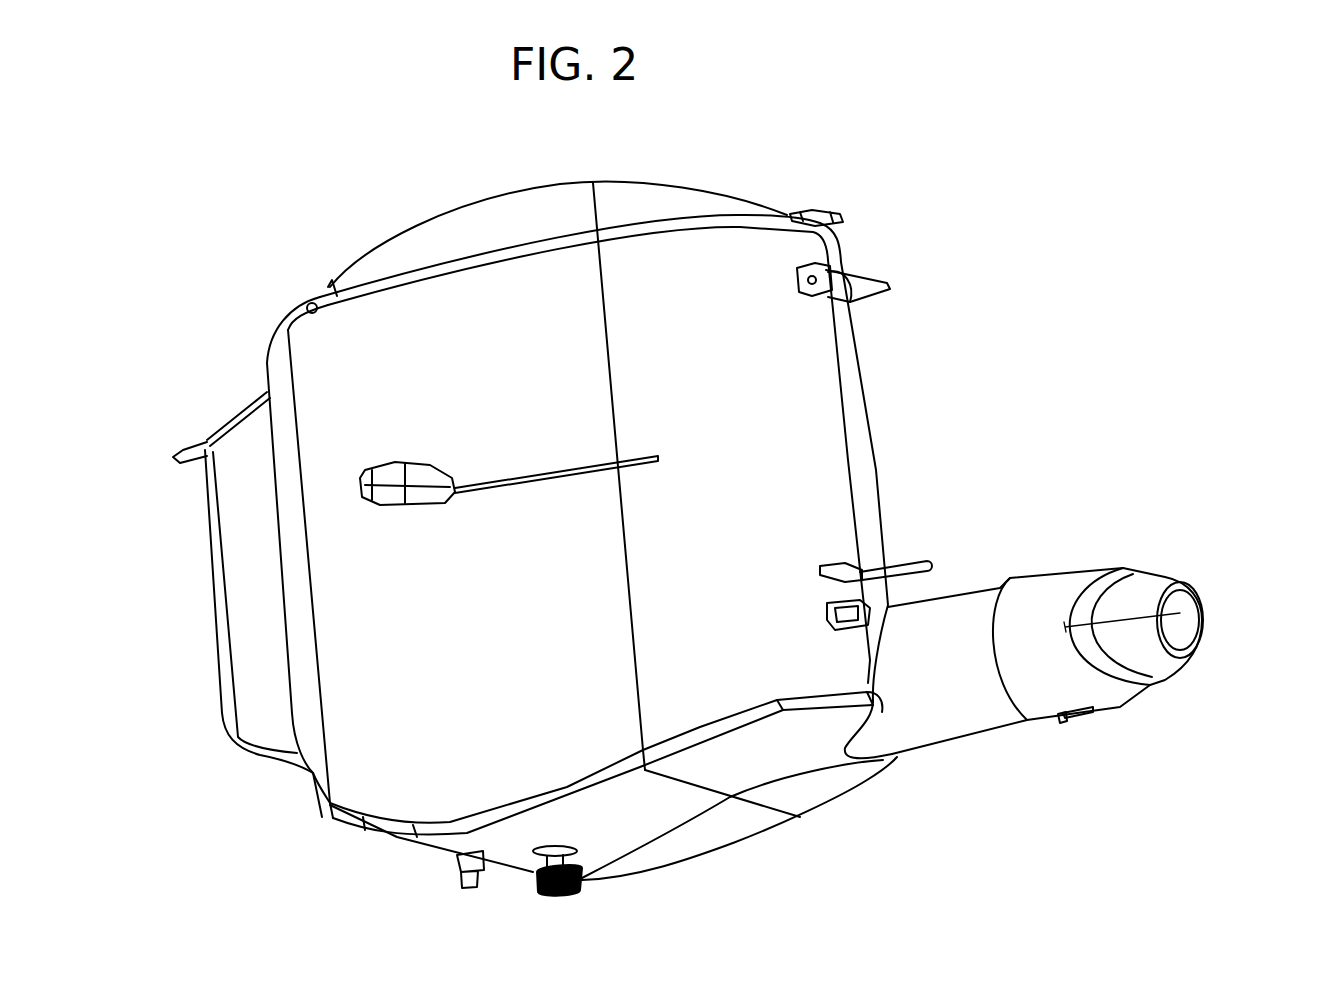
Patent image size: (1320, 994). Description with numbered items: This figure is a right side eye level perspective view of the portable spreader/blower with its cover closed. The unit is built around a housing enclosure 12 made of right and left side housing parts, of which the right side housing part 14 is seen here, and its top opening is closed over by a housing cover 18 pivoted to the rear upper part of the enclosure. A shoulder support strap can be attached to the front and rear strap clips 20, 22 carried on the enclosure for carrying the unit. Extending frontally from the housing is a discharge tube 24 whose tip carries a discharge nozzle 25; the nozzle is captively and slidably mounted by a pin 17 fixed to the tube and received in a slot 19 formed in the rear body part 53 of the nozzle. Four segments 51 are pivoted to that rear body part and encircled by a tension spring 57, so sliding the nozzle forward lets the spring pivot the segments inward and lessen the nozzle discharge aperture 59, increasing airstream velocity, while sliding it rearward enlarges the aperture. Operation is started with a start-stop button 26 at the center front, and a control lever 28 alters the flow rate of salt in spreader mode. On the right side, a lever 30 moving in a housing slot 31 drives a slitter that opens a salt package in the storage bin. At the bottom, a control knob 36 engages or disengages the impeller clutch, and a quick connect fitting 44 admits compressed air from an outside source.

The housing enclosure 12 is at (782, 525).
The right side housing part 14 is at (520, 643).
The pin 17 is at (1067, 722).
The housing cover 18 is at (668, 190).
The slot 19 is at (1090, 712).
The front strap clip 20 is at (877, 278).
The rear strap clip 22 is at (180, 463).
The discharge tube 24 is at (957, 735).
The discharge nozzle 25 is at (1087, 568).
The start-stop button 26 is at (892, 608).
The control lever 28 is at (908, 558).
The lever 30 is at (402, 497).
The housing slot 31 is at (503, 480).
The control knob 36 is at (572, 895).
The quick connect fitting 44 is at (460, 860).
The segment 51 is at (1147, 587).
The rear body part 53 is at (1040, 717).
The tension spring 57 is at (1157, 687).
The nozzle discharge aperture 59 is at (1185, 612).